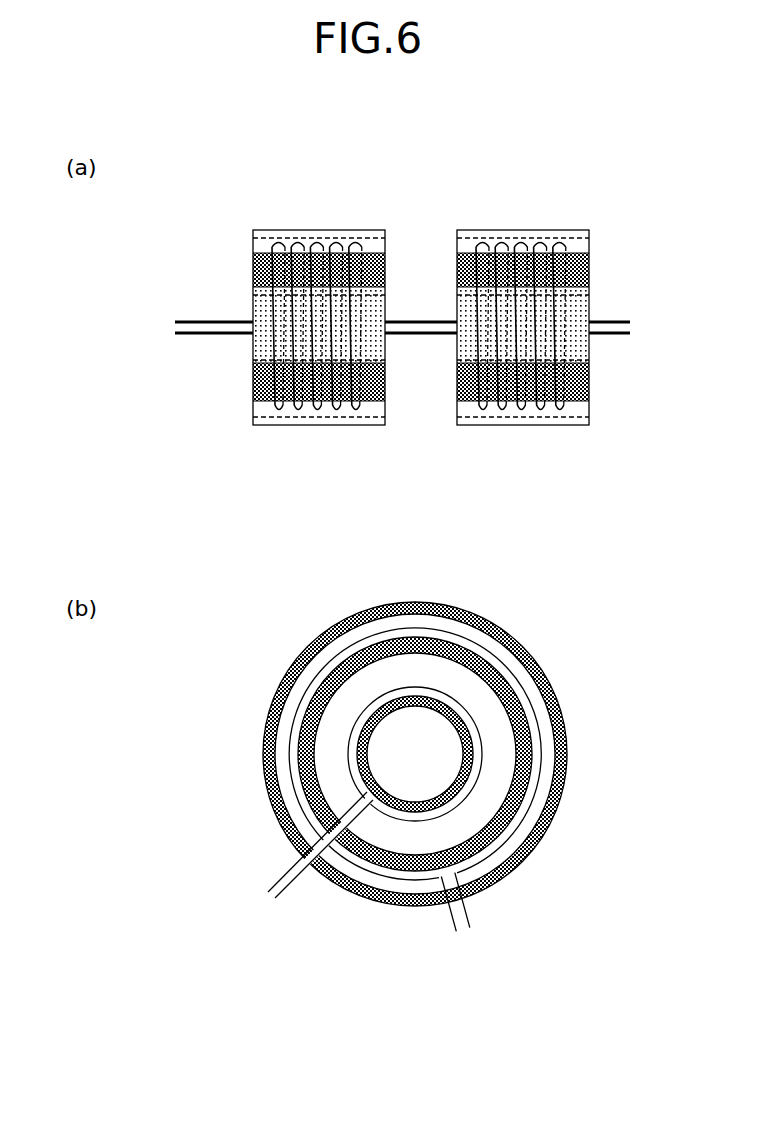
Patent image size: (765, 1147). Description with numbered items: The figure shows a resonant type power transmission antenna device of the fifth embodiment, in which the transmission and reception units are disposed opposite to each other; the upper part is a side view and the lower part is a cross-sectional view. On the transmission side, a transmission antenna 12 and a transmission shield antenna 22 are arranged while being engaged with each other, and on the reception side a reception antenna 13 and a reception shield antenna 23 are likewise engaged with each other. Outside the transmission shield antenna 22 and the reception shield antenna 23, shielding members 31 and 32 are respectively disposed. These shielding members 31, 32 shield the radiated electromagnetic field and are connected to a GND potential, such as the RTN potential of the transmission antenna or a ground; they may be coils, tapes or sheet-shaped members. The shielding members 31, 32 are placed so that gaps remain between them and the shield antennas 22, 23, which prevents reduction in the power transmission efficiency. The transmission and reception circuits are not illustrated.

The transmission antenna 12 is at (264, 385).
The reception antenna 13 is at (469, 385).
The transmission shield antenna 22 is at (330, 408).
The reception shield antenna 23 is at (540, 408).
The shielding member 31 is at (311, 230).
The shielding member 32 is at (518, 230).